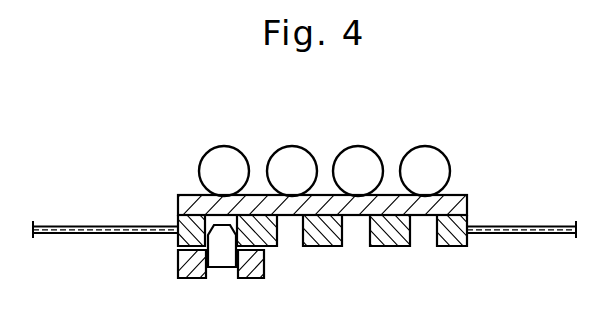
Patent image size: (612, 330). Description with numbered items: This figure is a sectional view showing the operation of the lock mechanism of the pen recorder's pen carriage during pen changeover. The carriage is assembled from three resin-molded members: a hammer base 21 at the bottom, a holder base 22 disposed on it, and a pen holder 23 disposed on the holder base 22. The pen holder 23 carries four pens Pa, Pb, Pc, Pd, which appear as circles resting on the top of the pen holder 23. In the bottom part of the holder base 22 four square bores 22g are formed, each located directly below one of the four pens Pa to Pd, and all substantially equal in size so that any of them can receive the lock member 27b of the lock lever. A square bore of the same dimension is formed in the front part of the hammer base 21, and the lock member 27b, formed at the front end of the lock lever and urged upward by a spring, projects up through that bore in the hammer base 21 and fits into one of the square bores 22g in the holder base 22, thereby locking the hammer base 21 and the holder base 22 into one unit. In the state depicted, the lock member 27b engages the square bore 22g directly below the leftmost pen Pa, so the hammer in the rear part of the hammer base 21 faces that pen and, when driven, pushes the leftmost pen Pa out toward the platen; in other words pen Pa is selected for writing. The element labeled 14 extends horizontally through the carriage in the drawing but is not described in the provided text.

The leftmost pen Pa is at (220, 156).
The pen Pb is at (293, 156).
The pen Pc is at (357, 156).
The pen Pd is at (425, 156).
The pen holder 23 is at (468, 211).
The holder base 22 is at (458, 248).
The square bores 22g is at (350, 233).
The hammer base 21 is at (178, 267).
The lock member 27b is at (223, 258).
The wire 14 is at (549, 236).